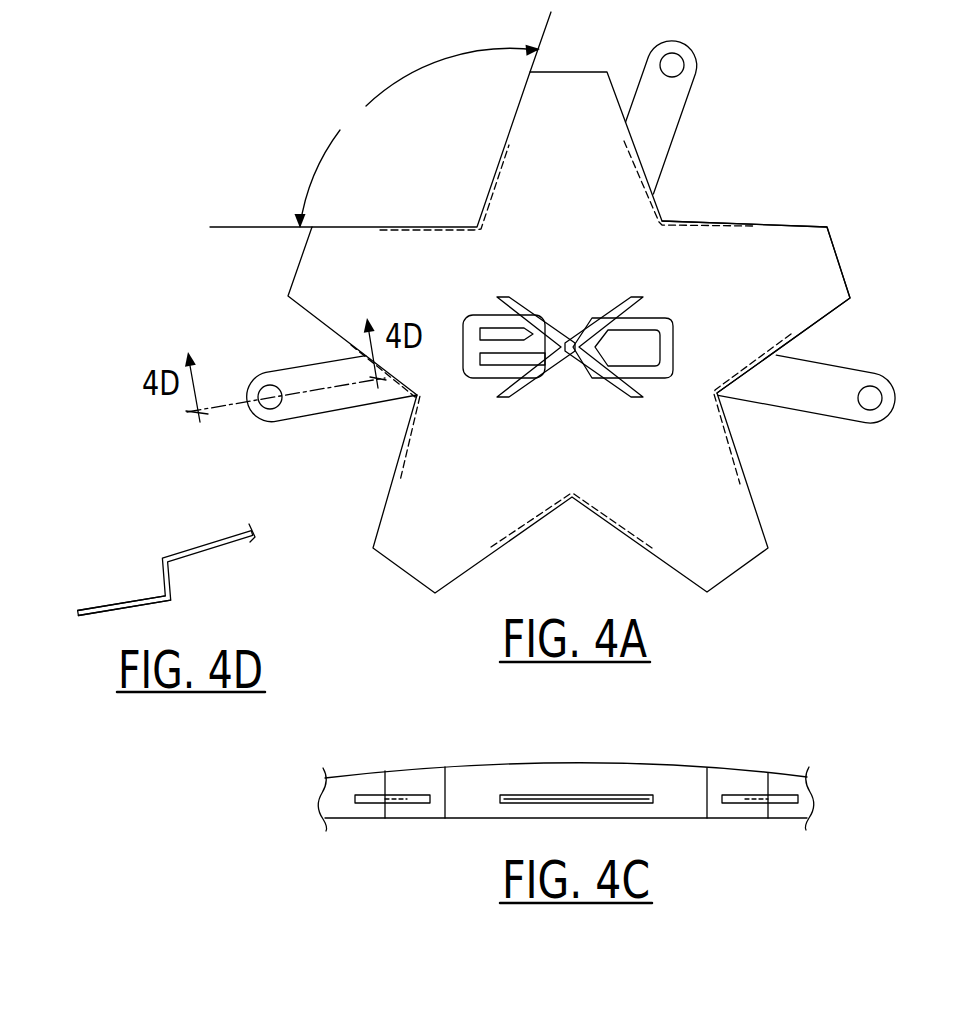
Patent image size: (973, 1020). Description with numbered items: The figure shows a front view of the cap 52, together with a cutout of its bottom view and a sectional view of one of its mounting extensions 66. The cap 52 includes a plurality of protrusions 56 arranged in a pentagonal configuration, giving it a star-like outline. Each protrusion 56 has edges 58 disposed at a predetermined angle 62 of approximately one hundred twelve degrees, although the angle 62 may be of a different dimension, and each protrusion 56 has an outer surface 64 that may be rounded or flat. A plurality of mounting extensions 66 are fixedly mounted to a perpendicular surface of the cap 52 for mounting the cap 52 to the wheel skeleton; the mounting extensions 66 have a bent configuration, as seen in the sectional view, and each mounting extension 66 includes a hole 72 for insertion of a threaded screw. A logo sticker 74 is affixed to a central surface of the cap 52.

In FIG. 4A, the cap 52 is at (573, 312).
In FIG. 4C, the cap 52 is at (566, 825).
In FIG. 4A, the protrusion 56 is at (722, 570).
In FIG. 4A, the edges 58 is at (362, 212).
In FIG. 4A, the angle 62 is at (380, 120).
In FIG. 4A, the outer surface 64 is at (856, 256).
In FIG. 4A, the mounting extension 66 is at (592, 268).
In FIG. 4C, the mounting extension 66 is at (535, 810).
In FIG. 4D, the mounting extension 66 is at (149, 574).
In FIG. 4A, the hole 72 is at (877, 370).
In FIG. 4D, the hole 72 is at (100, 628).
In FIG. 4A, the logo sticker 74 is at (680, 310).